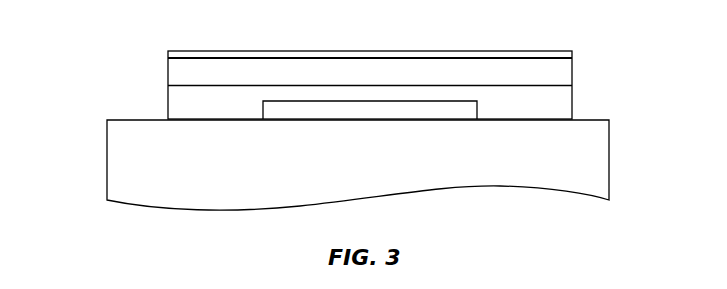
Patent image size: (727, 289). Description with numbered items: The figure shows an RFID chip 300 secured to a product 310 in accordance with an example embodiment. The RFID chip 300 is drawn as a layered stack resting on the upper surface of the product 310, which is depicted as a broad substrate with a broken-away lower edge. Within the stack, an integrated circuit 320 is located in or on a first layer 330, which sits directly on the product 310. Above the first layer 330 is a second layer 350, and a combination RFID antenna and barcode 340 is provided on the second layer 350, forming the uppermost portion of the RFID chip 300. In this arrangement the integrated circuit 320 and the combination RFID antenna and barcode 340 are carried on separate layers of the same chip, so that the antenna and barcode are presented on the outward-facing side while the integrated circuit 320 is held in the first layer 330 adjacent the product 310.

The RFID chip 300 is at (155, 99).
The product 310 is at (107, 160).
The integrated circuit 320 is at (477, 109).
The first layer 330 is at (213, 112).
The combination RFID antenna and barcode 340 is at (518, 51).
The second layer 350 is at (213, 82).